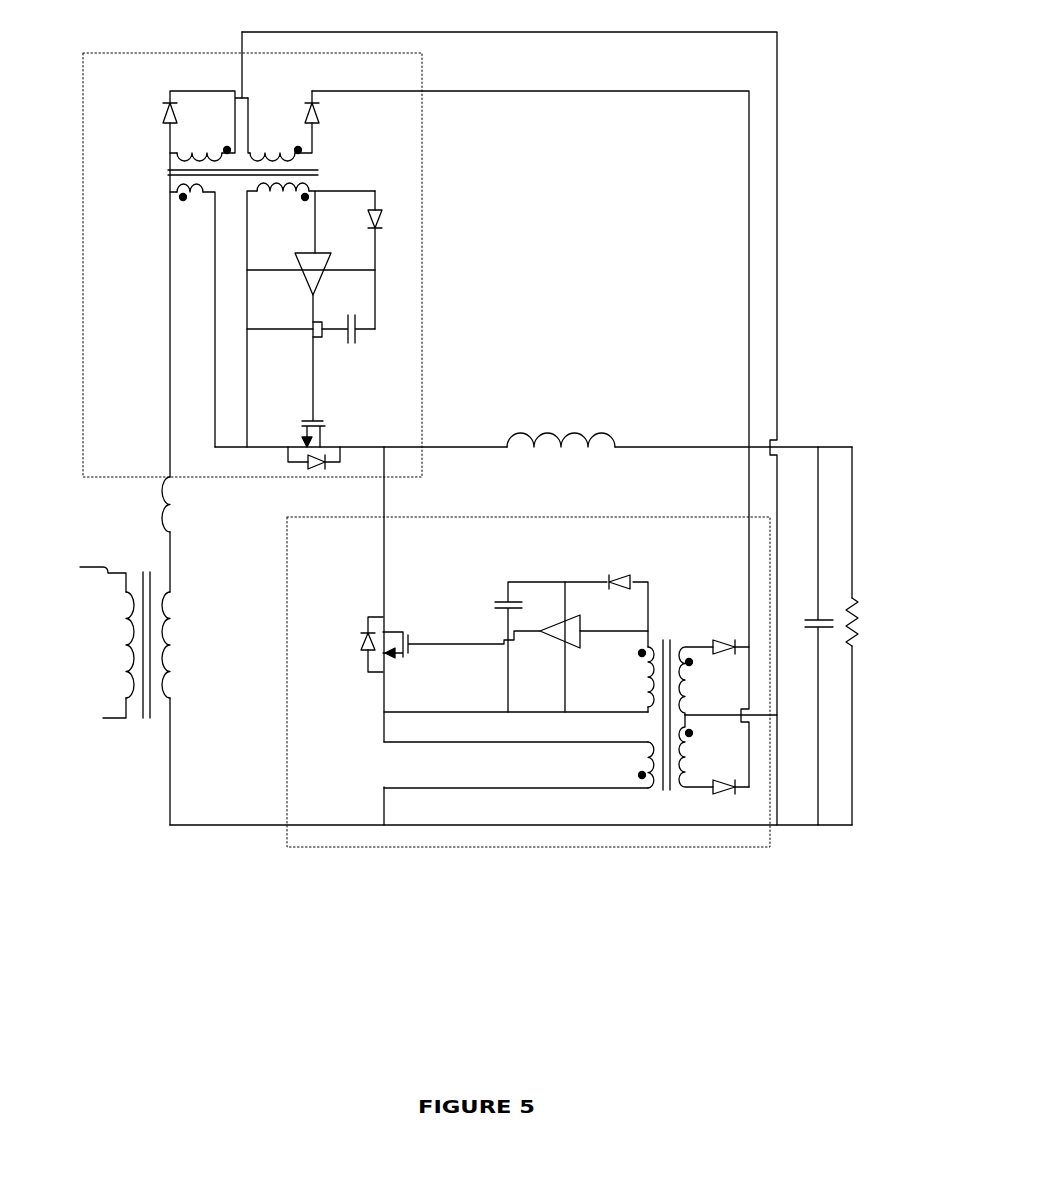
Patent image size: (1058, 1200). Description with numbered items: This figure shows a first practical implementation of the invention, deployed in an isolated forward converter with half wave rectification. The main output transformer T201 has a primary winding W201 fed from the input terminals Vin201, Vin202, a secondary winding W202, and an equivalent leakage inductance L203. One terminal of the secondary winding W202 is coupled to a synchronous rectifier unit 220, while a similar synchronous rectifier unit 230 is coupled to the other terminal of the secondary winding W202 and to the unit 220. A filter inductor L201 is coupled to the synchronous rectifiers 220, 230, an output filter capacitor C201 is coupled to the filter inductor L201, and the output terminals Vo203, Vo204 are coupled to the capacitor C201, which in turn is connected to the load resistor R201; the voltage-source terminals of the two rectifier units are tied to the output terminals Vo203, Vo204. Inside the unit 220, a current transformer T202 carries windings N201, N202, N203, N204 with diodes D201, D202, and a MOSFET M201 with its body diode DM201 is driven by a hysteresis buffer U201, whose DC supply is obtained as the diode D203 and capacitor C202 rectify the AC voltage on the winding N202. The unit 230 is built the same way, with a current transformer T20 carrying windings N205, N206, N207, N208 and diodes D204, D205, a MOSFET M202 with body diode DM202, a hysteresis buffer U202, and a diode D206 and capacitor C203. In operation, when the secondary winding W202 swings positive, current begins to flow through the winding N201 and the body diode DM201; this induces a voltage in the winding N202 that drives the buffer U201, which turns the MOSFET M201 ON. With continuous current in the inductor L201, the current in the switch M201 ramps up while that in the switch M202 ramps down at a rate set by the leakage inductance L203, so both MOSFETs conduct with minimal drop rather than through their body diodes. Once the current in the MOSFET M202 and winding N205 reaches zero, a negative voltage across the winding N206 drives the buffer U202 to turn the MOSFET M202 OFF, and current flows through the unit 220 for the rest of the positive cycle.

The synchronous rectifier unit 220 is at (125, 78).
The synchronous rectifier unit 230 is at (278, 740).
The transformer T201 is at (152, 558).
The current transformer T202 is at (160, 170).
The current transformer T20 is at (668, 797).
The primary winding W201 is at (128, 654).
The secondary winding W202 is at (203, 633).
The input terminal Vin201 is at (78, 553).
The input terminal Vin202 is at (68, 717).
The output terminal Vo203 is at (853, 428).
The output terminal Vo204 is at (777, 828).
The filter inductor L201 is at (577, 422).
The leakage inductance L203 is at (172, 490).
The output filter capacitor C201 is at (812, 623).
The capacitor C202 is at (358, 336).
The capacitor C203 is at (497, 598).
The load resistor R201 is at (868, 615).
The diode D201 is at (322, 130).
The diode D202 is at (162, 117).
The diode D203 is at (383, 218).
The diode D204 is at (730, 640).
The diode D205 is at (713, 797).
The diode D206 is at (647, 568).
The winding N201 is at (200, 197).
The winding N202 is at (272, 197).
The winding N203 is at (265, 150).
The winding N204 is at (210, 150).
The winding N205 is at (647, 751).
The winding N206 is at (652, 695).
The winding N207 is at (713, 697).
The winding N208 is at (690, 749).
The hysteresis buffer U201 is at (353, 248).
The hysteresis buffer U202 is at (607, 614).
The MOSFET M201 is at (348, 431).
The MOSFET M202 is at (393, 627).
The body diode DM201 is at (312, 472).
The body diode DM202 is at (358, 652).